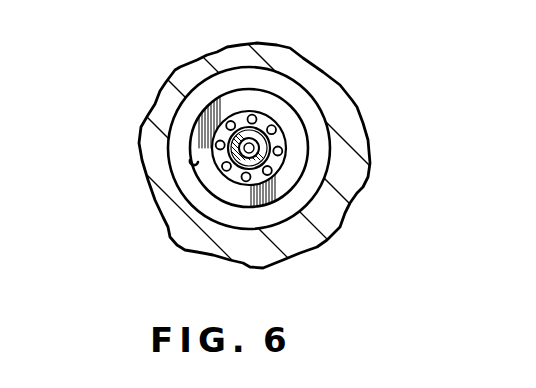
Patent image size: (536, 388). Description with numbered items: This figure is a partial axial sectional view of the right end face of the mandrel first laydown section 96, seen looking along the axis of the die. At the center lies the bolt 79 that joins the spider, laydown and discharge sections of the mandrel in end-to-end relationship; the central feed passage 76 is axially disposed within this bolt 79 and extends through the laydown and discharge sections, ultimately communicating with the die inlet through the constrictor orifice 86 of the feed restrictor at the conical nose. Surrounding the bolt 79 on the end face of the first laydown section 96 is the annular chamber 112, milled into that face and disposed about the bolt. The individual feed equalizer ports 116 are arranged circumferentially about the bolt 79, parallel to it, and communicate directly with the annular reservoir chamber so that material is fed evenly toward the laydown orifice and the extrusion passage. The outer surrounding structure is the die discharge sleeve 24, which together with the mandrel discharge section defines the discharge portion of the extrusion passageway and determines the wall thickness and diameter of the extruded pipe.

The die discharge sleeve 24 is at (175, 98).
The central feed passage 76 is at (264, 135).
The bolt 79 is at (229, 139).
The constrictor orifice 86 is at (231, 152).
The first laydown section 96 is at (336, 91).
The annular chamber 112 is at (272, 148).
The feed equalizer ports 116 is at (272, 155).